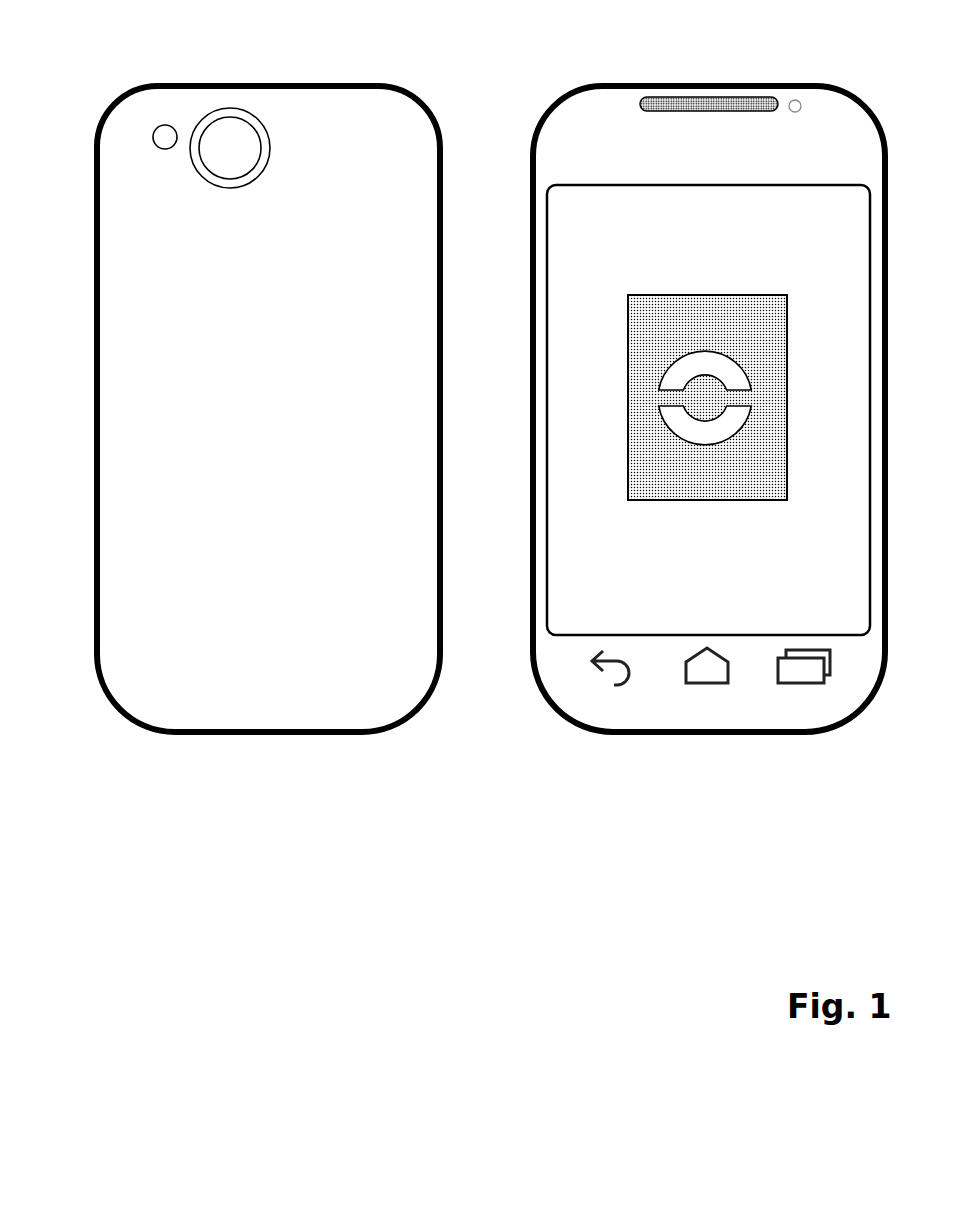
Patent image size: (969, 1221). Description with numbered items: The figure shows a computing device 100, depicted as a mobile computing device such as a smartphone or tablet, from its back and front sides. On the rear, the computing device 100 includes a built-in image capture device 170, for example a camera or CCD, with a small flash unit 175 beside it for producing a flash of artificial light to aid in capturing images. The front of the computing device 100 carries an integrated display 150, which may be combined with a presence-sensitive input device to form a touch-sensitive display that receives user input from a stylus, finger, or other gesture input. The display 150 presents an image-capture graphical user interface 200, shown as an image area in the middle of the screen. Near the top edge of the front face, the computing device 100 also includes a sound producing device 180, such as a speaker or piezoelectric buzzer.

The computing device 100 is at (266, 741).
The display 150 is at (575, 638).
The image capture device 170 is at (204, 108).
The flash unit 175 is at (157, 151).
The sound producing device 180 is at (640, 98).
The image-capture graphical user interface 200 is at (584, 519).